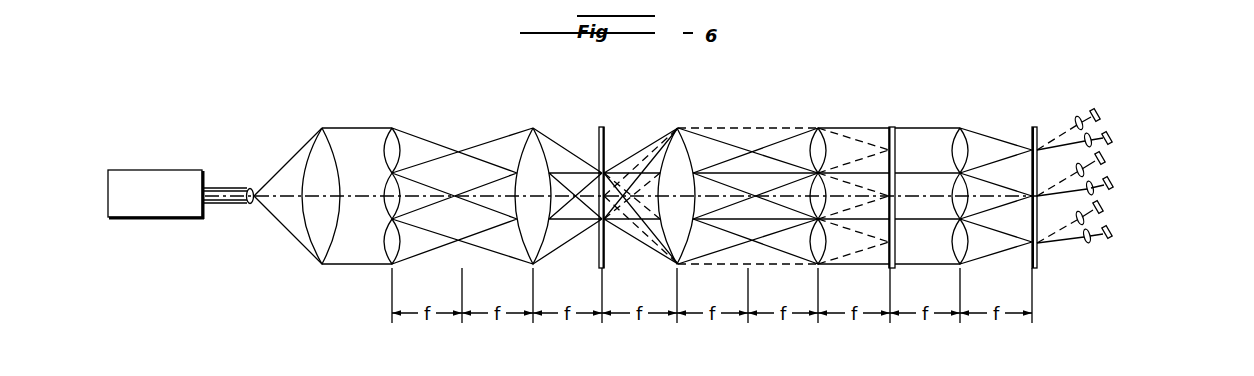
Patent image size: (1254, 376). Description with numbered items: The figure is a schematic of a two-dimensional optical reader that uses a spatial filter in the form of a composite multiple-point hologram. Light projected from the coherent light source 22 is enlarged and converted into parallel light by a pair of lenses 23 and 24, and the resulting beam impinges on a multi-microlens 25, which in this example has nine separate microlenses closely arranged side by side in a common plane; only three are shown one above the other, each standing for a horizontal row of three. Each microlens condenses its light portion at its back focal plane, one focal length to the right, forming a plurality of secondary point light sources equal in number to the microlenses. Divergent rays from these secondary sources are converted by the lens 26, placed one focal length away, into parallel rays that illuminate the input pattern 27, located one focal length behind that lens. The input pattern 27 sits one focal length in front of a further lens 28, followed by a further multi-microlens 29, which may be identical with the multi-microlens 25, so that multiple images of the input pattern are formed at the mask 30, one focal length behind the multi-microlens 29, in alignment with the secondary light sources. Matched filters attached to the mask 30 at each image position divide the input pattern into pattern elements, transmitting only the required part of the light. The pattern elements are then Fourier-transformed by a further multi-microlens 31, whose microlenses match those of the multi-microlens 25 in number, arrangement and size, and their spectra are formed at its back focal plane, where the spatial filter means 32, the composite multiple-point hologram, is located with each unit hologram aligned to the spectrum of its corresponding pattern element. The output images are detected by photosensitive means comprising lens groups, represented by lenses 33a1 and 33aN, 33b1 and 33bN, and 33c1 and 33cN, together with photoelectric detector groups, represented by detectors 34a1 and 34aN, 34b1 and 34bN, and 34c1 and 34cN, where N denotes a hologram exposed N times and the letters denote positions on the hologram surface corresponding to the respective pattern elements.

The coherent light source 22 is at (167, 201).
The lens 23 is at (250, 188).
The lens 24 is at (322, 127).
The multi-microlens 25 is at (392, 127).
The lens 26 is at (533, 127).
The input pattern 27 is at (602, 127).
The lens 28 is at (677, 127).
The multi-microlens 29 is at (818, 127).
The mask 30 is at (890, 127).
The multi-microlens 31 is at (960, 127).
The spatial filter means 32 is at (1033, 127).
The lens 33aN is at (1079, 121).
The lens 33a1 is at (1093, 134).
The lens 33bN is at (1086, 170).
The lens 33b1 is at (1095, 190).
The lens 33cN is at (1079, 219).
The lens 33c1 is at (1088, 238).
The photoelectric detector 34aN is at (1113, 72).
The photoelectric detector 34a1 is at (1113, 139).
The photoelectric detector 34bN is at (1106, 156).
The photoelectric detector 34b1 is at (1112, 185).
The photoelectric detector 34cN is at (1108, 210).
The photoelectric detector 34c1 is at (1111, 236).